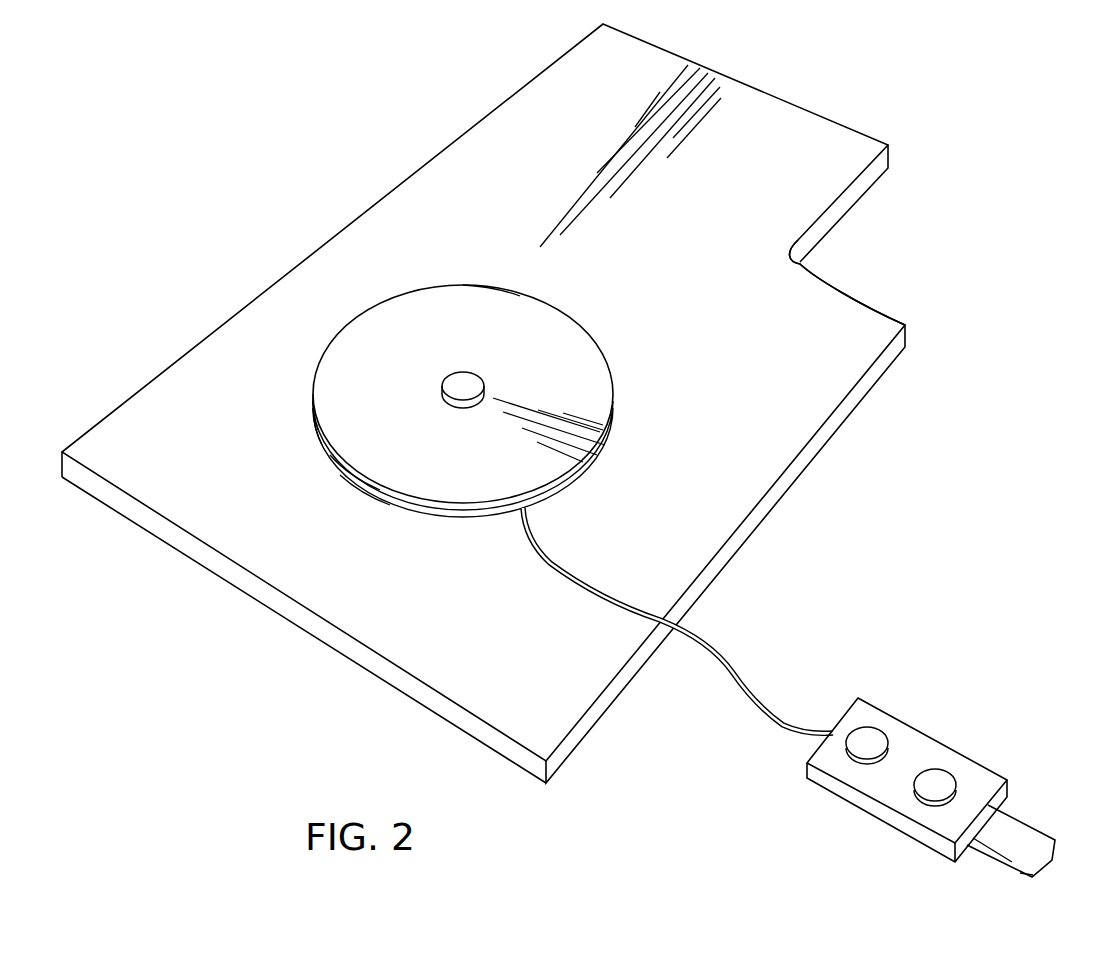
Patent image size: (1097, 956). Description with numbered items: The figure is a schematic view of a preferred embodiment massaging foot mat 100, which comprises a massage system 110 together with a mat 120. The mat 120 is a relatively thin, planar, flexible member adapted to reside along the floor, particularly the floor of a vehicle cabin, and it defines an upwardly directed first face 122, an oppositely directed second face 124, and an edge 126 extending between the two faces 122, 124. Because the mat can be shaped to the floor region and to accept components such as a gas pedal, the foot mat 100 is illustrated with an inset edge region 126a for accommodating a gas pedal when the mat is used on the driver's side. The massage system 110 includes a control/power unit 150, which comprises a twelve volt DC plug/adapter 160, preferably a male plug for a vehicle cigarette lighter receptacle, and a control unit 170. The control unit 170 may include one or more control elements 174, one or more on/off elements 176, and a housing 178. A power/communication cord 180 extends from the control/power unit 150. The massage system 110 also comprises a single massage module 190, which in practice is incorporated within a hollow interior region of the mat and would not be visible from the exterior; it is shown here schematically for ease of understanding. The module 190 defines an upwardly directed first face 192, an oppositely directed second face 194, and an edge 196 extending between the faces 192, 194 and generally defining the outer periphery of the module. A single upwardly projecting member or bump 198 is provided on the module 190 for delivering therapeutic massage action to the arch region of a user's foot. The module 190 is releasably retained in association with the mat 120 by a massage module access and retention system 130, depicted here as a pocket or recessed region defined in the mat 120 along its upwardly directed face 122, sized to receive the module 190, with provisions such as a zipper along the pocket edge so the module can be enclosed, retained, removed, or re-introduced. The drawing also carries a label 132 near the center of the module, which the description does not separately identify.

The massaging foot mat 100 is at (187, 125).
The massage system 110 is at (580, 826).
The mat 120 is at (497, 153).
The first face 122 is at (434, 185).
The second face 124 is at (399, 240).
The edge 126 is at (877, 376).
The inset edge region 126a is at (873, 308).
The massage module access and retention system 130 is at (609, 460).
The knob 132 is at (442, 386).
The control/power unit 150 is at (963, 870).
The plug/adapter 160 is at (1025, 842).
The control unit 170 is at (893, 712).
The control element 174 is at (868, 738).
The on/off element 176 is at (943, 783).
The housing 178 is at (905, 762).
The power/communication cord 180 is at (785, 722).
The massage module 190 is at (365, 462).
The first face 192 is at (340, 404).
The second face 194 is at (340, 438).
The edge 196 is at (372, 490).
The outwardly projecting member 198 is at (473, 367).